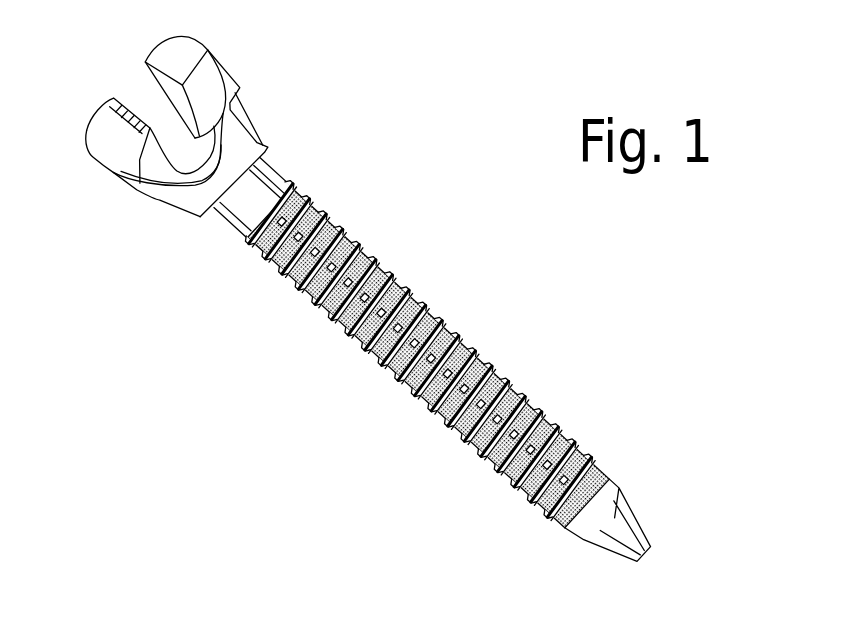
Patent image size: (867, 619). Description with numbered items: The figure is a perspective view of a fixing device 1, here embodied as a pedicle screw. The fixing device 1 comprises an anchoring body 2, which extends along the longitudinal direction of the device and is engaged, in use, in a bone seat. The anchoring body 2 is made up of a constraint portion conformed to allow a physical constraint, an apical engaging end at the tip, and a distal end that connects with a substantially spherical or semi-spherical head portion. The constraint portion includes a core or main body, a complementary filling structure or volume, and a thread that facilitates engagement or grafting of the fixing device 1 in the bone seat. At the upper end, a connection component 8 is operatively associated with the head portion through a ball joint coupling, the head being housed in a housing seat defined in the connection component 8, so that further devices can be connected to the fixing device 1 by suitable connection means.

The fixing device 1 is at (393, 103).
The anchoring body 2 is at (243, 274).
The connection component 8 is at (137, 190).